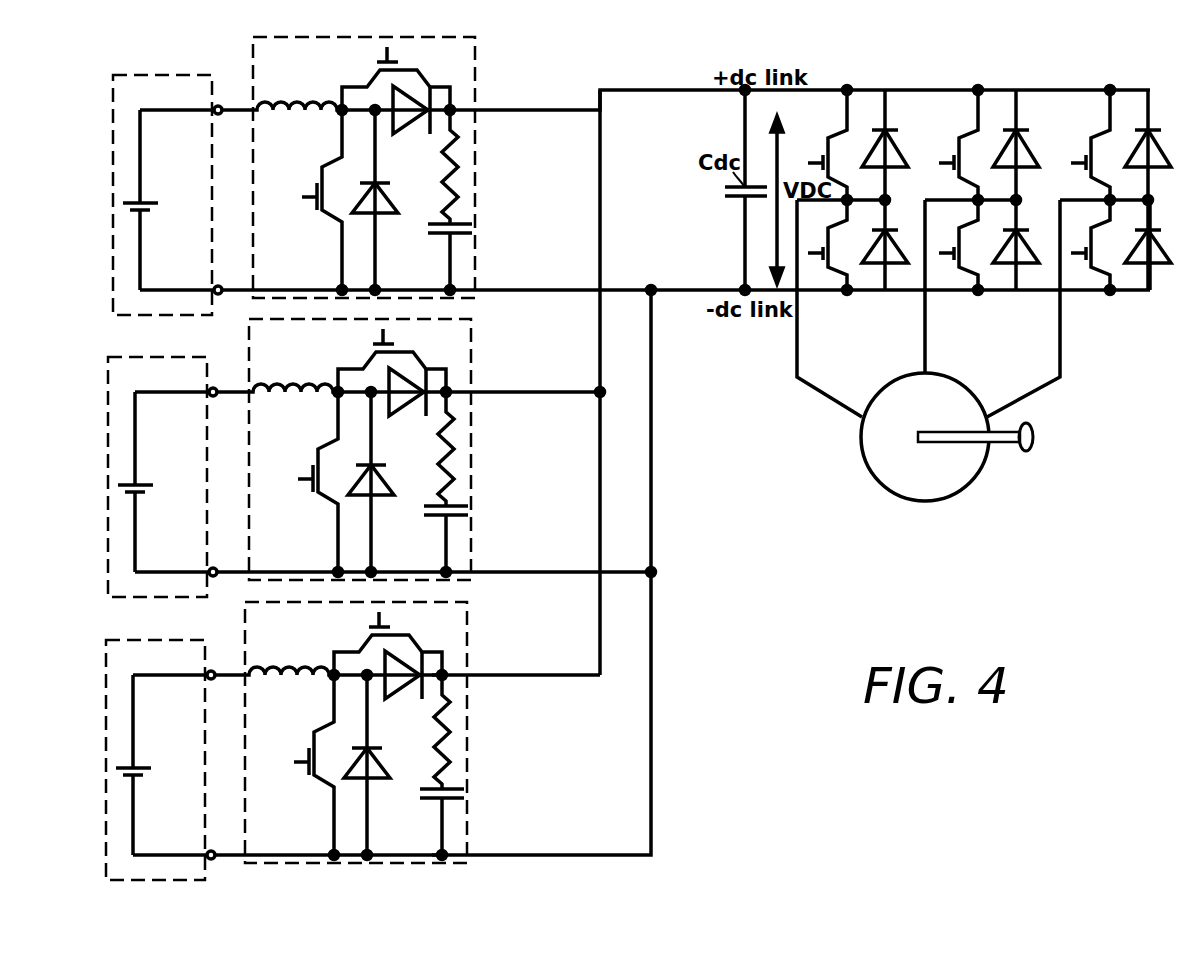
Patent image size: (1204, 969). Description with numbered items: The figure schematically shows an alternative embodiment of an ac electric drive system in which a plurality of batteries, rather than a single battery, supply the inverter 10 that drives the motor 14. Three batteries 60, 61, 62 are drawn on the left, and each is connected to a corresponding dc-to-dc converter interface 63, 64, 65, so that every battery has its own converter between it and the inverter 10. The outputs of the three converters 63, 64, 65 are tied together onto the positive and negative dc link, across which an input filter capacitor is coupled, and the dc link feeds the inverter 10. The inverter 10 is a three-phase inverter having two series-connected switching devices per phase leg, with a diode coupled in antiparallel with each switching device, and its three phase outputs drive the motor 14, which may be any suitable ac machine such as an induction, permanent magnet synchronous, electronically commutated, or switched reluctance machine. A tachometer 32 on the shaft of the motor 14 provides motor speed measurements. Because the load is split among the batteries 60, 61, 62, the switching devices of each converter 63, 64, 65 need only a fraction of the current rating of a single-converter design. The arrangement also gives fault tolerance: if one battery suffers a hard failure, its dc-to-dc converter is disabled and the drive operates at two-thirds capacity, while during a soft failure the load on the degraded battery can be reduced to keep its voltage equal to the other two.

The inverter 10 is at (1098, 70).
The motor 14 is at (937, 474).
The tachometer 32 is at (1018, 452).
The battery 60 is at (140, 75).
The battery 61 is at (137, 355).
The battery 62 is at (135, 640).
The dc-to-dc converter interface 63 is at (475, 44).
The dc-to-dc converter interface 64 is at (471, 326).
The dc-to-dc converter interface 65 is at (467, 608).